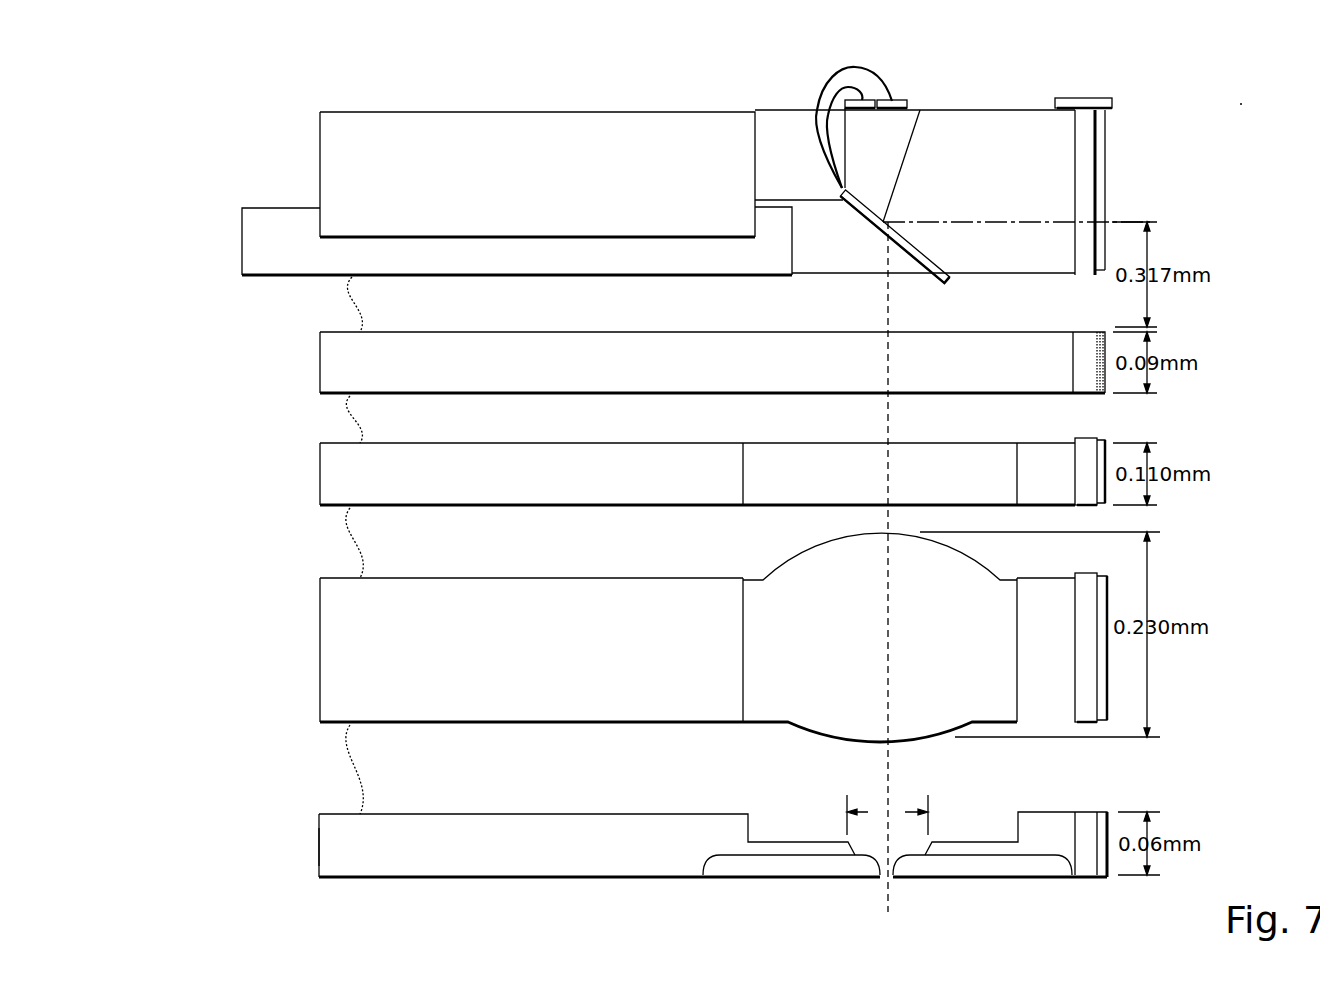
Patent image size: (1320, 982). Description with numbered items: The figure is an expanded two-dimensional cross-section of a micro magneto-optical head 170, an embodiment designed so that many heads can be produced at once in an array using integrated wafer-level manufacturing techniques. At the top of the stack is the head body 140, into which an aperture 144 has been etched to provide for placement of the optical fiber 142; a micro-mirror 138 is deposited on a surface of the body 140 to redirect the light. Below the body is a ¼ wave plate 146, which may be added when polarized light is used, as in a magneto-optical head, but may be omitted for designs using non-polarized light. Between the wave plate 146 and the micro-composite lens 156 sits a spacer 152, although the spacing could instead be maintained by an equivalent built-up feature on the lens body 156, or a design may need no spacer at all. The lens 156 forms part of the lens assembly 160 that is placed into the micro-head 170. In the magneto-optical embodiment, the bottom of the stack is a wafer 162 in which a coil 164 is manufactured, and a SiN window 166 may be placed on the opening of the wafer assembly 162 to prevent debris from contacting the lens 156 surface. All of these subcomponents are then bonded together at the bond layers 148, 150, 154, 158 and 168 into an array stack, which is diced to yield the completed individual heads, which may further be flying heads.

The micro-mirror 138 is at (870, 228).
The head body 140 is at (556, 188).
The optical fiber 142 is at (296, 250).
The aperture 144 is at (772, 130).
The ¼ wave plate 146 is at (714, 375).
The bond 148 is at (342, 305).
The bond 150 is at (342, 420).
The spacer 152 is at (552, 482).
The bond 154 is at (342, 540).
The micro-composite lens 156 is at (850, 660).
The bond 158 is at (344, 765).
The lens assembly 160 is at (548, 660).
The wafer 162 is at (534, 856).
The coil 164 is at (780, 878).
The SiN window 166 is at (893, 890).
The bond 168 is at (318, 828).
The micro-head 170 is at (1237, 108).